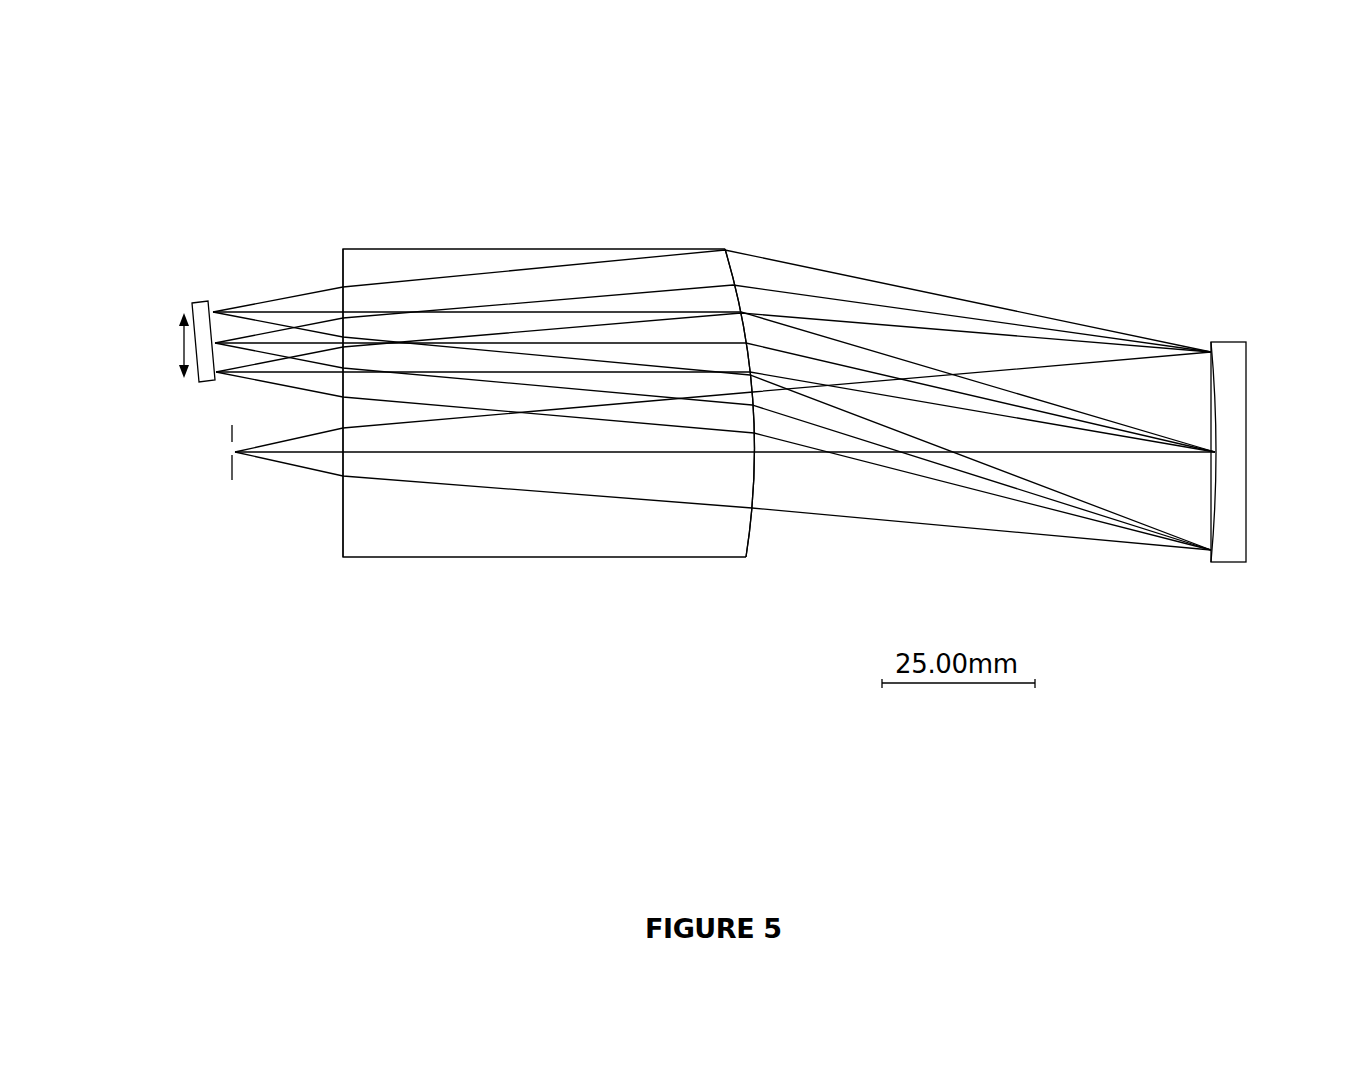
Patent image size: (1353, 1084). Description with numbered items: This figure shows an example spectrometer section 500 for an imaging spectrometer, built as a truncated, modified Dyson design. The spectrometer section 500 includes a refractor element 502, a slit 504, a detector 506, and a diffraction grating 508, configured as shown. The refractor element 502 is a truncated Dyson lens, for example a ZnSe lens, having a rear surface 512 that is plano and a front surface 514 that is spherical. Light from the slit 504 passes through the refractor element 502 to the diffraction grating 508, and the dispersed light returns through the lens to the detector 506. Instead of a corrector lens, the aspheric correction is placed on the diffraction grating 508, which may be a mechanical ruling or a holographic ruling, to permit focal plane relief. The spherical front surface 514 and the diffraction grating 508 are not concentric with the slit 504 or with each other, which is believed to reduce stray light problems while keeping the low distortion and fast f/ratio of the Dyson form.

The spectrometer section 500 is at (478, 150).
The refractor element 502 is at (546, 248).
The slit 504 is at (232, 436).
The detector 506 is at (199, 302).
The diffraction grating 508 is at (1213, 528).
The rear surface 512 is at (343, 538).
The front surface 514 is at (752, 527).